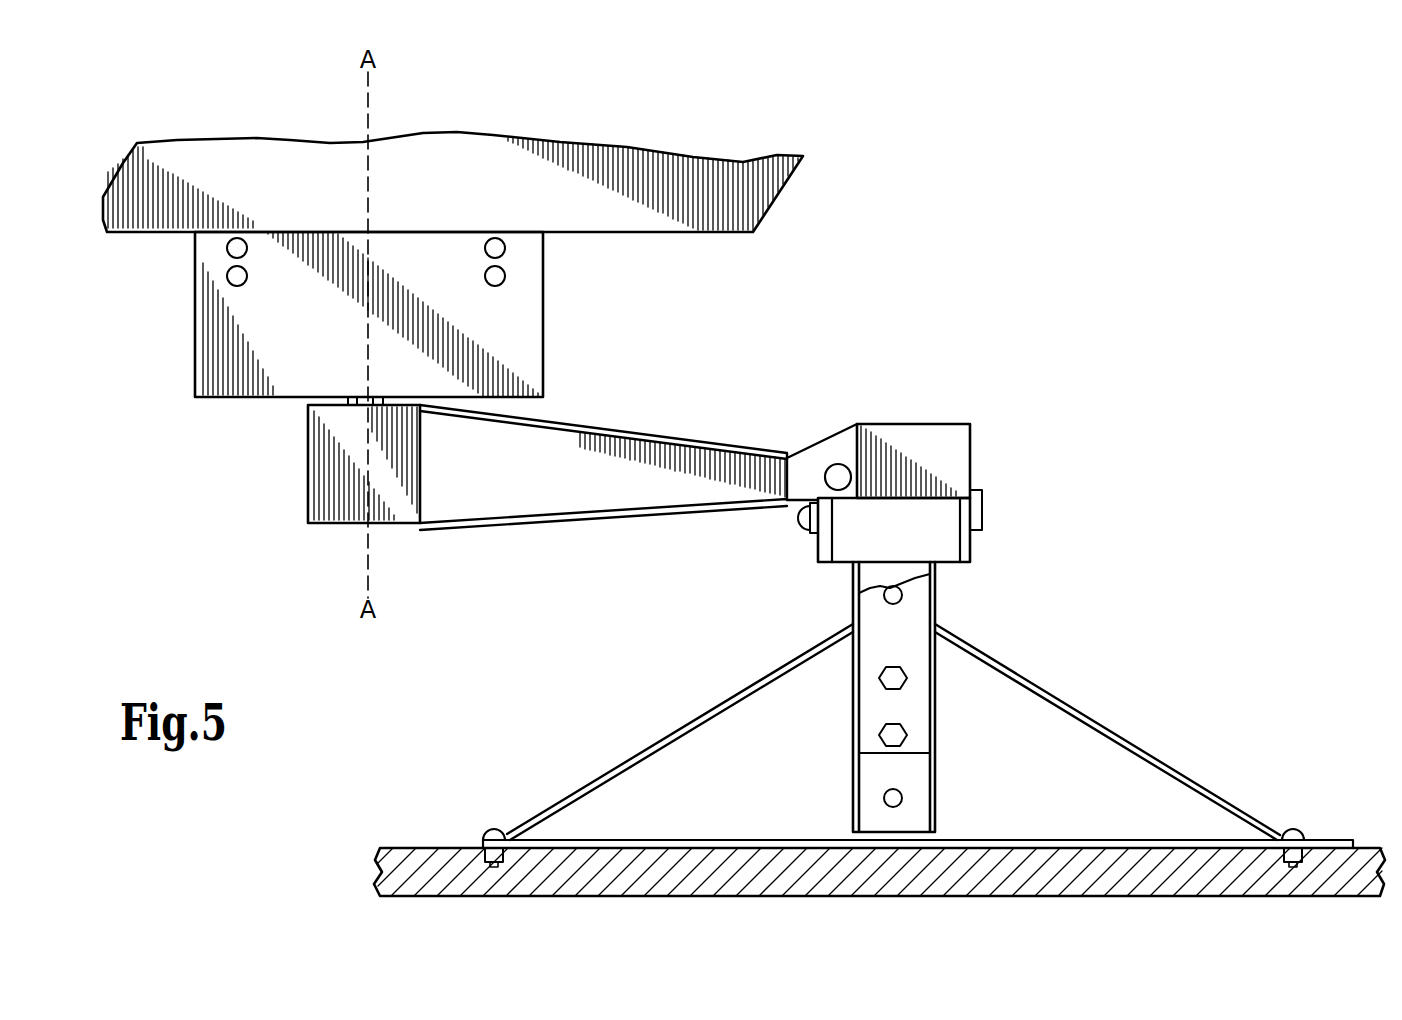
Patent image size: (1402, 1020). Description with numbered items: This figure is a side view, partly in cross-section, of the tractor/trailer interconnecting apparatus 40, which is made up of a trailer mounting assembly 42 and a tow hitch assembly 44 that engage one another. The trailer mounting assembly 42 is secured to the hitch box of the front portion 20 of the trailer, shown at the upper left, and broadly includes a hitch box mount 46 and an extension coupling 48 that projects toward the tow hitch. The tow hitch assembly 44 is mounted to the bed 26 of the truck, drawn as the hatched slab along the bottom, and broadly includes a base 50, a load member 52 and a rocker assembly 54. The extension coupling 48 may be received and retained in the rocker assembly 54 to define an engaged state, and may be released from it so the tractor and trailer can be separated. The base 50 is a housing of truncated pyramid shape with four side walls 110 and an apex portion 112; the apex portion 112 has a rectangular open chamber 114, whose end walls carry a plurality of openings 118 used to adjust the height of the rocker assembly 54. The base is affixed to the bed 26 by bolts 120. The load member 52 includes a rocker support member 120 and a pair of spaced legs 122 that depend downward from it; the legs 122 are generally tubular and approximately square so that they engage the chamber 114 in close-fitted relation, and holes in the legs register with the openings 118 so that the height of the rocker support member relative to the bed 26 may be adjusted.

The front portion 20 is at (643, 210).
The bed 26 is at (420, 845).
The tractor/trailer interconnecting apparatus 40 is at (895, 548).
The trailer mounting assembly 42 is at (283, 517).
The tow hitch assembly 44 is at (918, 698).
The hitch box mount 46 is at (356, 352).
The extension coupling 48 is at (540, 480).
The base 50 is at (899, 732).
The load member 52 is at (935, 585).
The rocker assembly 54 is at (950, 448).
The side walls 110 is at (672, 734).
The apex portion 112 is at (975, 620).
The chamber 114 is at (896, 786).
The openings 118 is at (886, 798).
The bolts 120 is at (935, 526).
The legs 122 is at (887, 625).